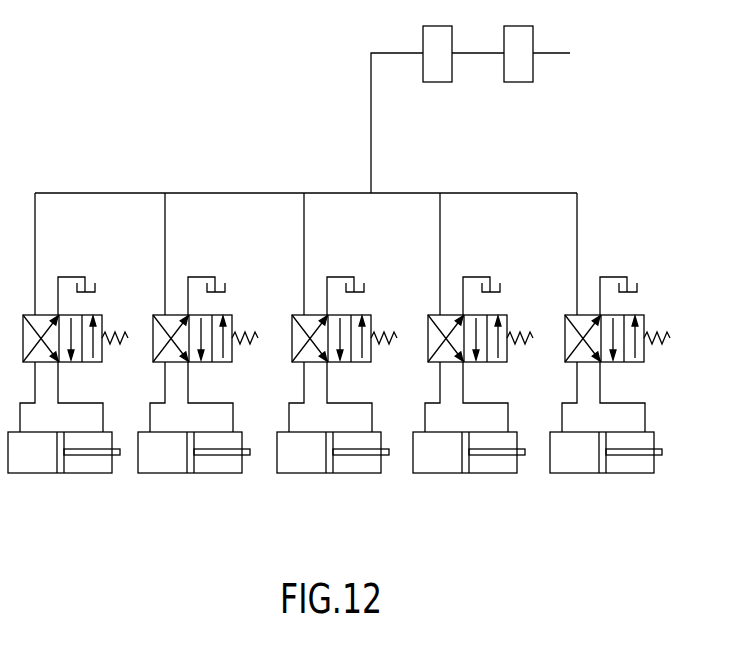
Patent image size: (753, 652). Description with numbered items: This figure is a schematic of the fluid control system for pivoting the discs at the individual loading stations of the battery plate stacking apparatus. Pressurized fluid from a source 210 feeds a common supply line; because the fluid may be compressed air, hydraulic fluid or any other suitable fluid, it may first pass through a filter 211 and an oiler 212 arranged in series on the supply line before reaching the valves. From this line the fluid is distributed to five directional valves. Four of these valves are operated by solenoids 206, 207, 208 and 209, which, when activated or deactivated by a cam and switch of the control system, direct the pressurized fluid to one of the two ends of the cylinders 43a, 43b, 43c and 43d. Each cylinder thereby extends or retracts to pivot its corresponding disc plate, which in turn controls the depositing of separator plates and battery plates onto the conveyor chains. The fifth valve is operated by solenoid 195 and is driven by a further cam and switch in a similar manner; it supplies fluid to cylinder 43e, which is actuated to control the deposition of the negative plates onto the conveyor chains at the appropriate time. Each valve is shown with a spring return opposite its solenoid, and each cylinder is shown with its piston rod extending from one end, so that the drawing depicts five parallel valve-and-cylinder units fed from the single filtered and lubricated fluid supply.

The solenoid 195 is at (676, 343).
The solenoid 206 is at (118, 336).
The solenoid 207 is at (256, 336).
The solenoid 208 is at (396, 336).
The solenoid 209 is at (531, 336).
The source 210 is at (558, 53).
The filter 211 is at (517, 82).
The oiler 212 is at (438, 82).
The cylinder 43a is at (82, 475).
The cylinder 43b is at (217, 475).
The cylinder 43c is at (360, 475).
The cylinder 43d is at (485, 475).
The cylinder 43e is at (587, 468).